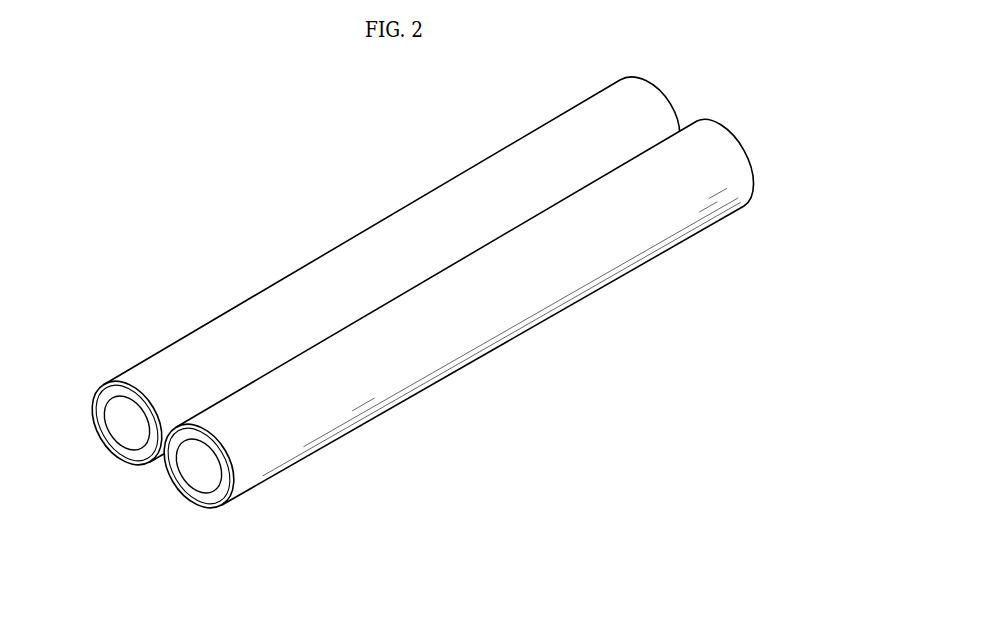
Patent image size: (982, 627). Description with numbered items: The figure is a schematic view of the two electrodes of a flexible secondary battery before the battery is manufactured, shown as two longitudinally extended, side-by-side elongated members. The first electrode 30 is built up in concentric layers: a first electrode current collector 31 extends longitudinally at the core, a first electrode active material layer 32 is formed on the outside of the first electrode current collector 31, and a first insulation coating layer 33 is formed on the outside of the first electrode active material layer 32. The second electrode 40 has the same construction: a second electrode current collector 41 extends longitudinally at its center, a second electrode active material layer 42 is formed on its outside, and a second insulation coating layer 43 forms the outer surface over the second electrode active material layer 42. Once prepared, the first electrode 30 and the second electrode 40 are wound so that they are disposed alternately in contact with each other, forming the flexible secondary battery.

The first electrode 30 is at (160, 296).
The first electrode current collector 31 is at (126, 428).
The first electrode active material layer 32 is at (97, 411).
The first insulation coating layer 33 is at (94, 395).
The second electrode 40 is at (291, 496).
The second electrode current collector 41 is at (190, 464).
The second electrode active material layer 42 is at (187, 487).
The second insulation coating layer 43 is at (197, 506).